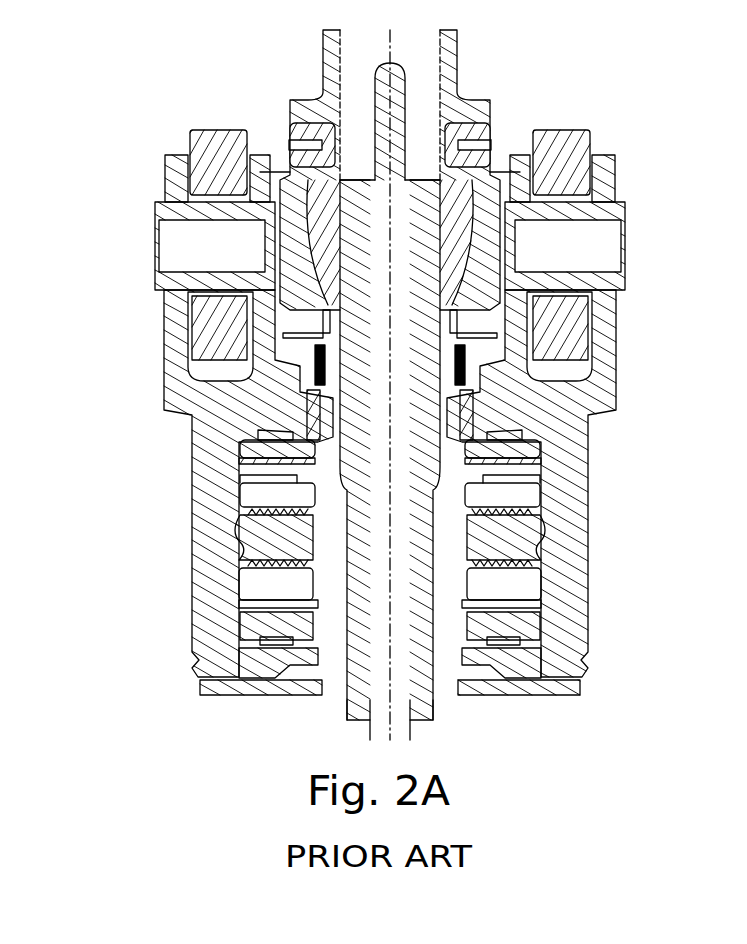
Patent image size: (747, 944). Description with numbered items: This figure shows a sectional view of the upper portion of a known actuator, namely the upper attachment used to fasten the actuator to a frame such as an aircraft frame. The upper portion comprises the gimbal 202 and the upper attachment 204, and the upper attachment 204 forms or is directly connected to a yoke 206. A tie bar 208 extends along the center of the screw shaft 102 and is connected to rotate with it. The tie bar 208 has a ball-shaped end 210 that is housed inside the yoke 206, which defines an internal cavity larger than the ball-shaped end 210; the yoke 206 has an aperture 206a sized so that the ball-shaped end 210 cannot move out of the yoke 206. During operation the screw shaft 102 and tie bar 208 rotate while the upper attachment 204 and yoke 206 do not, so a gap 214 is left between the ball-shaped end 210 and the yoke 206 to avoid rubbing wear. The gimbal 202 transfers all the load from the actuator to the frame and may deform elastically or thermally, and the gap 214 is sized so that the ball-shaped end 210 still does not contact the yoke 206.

The screw shaft 102 is at (457, 706).
The gimbal 202 is at (168, 200).
The upper attachment 204 is at (450, 78).
The yoke 206 is at (490, 257).
The aperture 206a is at (470, 312).
The tie bar 208 is at (427, 637).
The ball-shaped end 210 is at (490, 167).
The gap 214 is at (345, 277).